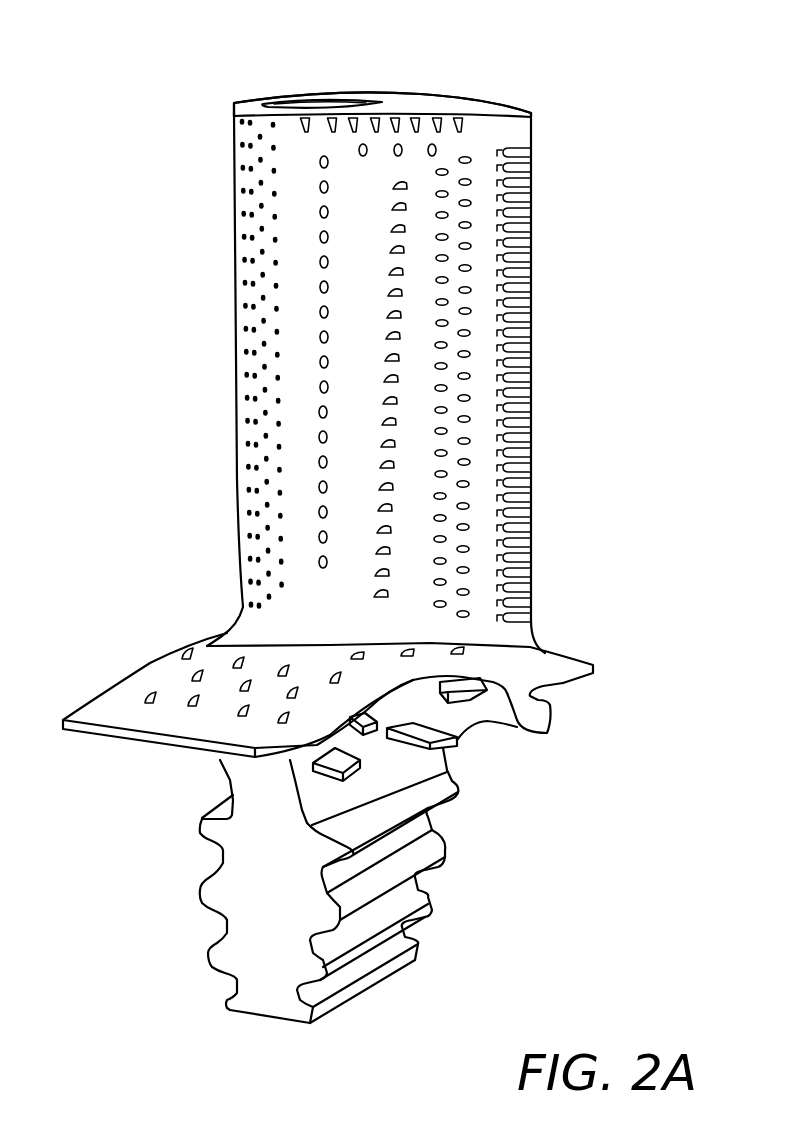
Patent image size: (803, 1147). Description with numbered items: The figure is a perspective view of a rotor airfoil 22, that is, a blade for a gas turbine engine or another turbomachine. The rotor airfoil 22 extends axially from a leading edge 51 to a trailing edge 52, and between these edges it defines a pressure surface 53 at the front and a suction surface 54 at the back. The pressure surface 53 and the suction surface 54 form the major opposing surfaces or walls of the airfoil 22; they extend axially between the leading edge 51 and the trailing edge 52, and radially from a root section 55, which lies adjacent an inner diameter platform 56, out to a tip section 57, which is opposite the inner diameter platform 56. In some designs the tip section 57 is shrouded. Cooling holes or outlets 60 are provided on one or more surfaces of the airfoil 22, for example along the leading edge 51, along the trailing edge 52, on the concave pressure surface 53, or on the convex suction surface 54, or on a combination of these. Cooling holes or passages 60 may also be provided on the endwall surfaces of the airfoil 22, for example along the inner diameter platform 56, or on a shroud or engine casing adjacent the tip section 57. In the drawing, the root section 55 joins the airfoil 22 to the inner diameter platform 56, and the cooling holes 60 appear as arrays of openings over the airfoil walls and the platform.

The rotor airfoil 22 is at (115, 103).
The leading edge 51 is at (236, 270).
The trailing edge 52 is at (533, 387).
The pressure surface 53 is at (353, 398).
The suction surface 54 is at (468, 97).
The root section 55 is at (264, 632).
The inner diameter platform 56 is at (140, 670).
The tip section 57 is at (413, 113).
The cooling holes 60 is at (396, 226).